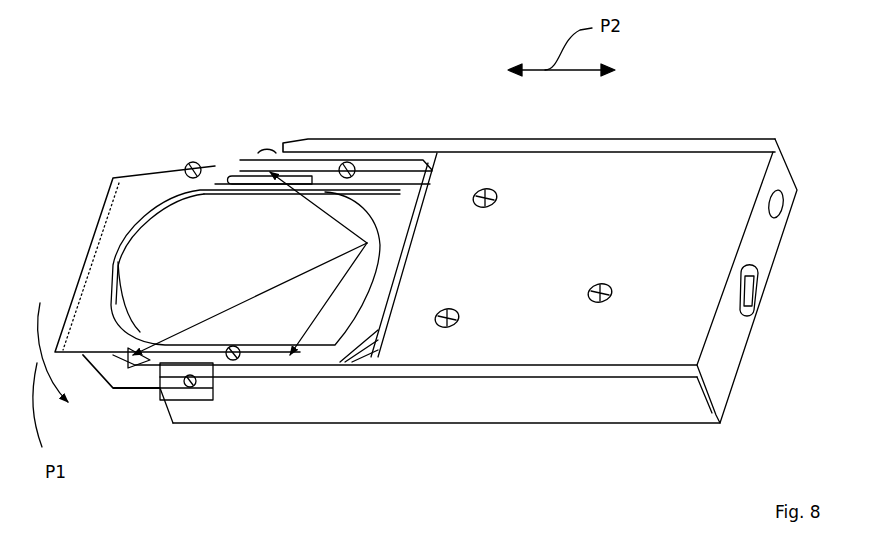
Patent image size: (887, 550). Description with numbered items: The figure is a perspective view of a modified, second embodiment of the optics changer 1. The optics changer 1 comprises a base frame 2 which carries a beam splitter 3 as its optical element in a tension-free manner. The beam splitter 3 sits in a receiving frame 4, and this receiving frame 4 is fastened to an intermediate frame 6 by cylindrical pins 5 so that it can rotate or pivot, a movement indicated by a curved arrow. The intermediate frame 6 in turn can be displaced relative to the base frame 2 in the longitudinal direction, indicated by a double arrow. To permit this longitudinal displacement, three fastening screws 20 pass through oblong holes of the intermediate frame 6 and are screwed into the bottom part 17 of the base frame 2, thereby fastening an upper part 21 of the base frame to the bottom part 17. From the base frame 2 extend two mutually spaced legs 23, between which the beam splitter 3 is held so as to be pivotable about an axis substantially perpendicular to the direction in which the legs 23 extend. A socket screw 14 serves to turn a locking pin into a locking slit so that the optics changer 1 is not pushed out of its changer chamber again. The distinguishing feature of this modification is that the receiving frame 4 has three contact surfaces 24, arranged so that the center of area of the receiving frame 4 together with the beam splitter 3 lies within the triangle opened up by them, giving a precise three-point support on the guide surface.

The optics changer 1 is at (387, 138).
The base frame 2 is at (493, 423).
The beam splitter 3 is at (200, 218).
The receiving frame 4 is at (148, 383).
The cylindrical pins 5 is at (270, 157).
The intermediate frame 6 is at (147, 383).
The socket screw 14 is at (757, 297).
The bottom part 17 is at (568, 400).
The fastening screws 20 is at (478, 188).
The upper part 21 is at (717, 177).
The legs 23 is at (330, 137).
The contact surfaces 24 is at (370, 262).